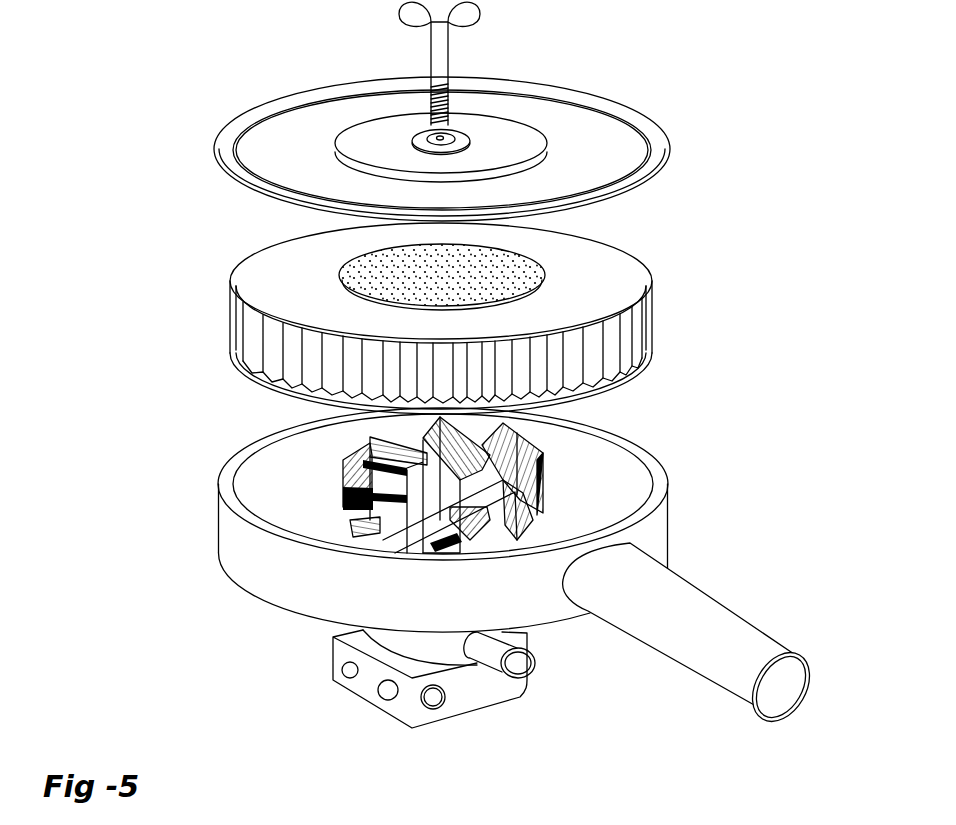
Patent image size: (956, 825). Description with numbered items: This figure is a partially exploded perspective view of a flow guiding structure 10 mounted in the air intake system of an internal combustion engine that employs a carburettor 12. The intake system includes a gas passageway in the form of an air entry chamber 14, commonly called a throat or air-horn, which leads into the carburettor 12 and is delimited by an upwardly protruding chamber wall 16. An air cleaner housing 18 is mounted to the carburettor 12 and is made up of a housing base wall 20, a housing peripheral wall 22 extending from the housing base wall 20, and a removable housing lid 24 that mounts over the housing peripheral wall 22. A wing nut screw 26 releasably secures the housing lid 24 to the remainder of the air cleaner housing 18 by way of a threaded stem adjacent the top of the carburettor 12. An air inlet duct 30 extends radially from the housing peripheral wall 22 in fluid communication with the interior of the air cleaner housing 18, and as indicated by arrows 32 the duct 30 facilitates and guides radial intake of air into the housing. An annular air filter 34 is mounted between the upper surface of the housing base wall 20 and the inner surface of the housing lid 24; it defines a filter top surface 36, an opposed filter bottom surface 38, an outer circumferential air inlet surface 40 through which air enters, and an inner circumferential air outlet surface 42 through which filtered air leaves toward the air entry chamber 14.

The flow guiding structure 10 is at (447, 502).
The carburettor 12 is at (397, 646).
The air entry chamber 14 is at (420, 412).
The chamber wall 16 is at (383, 530).
The air cleaner housing 18 is at (447, 515).
The housing base wall 20 is at (283, 513).
The housing peripheral wall 22 is at (656, 526).
The housing lid 24 is at (593, 135).
The wing nut screw 26 is at (438, 57).
The air inlet duct 30 is at (694, 674).
The arrows 32 is at (803, 707).
The annular air filter 34 is at (401, 306).
The filter top surface 36 is at (582, 250).
The filter bottom surface 38 is at (265, 392).
The outer circumferential air inlet surface 40 is at (655, 324).
The inner circumferential air outlet surface 42 is at (374, 278).